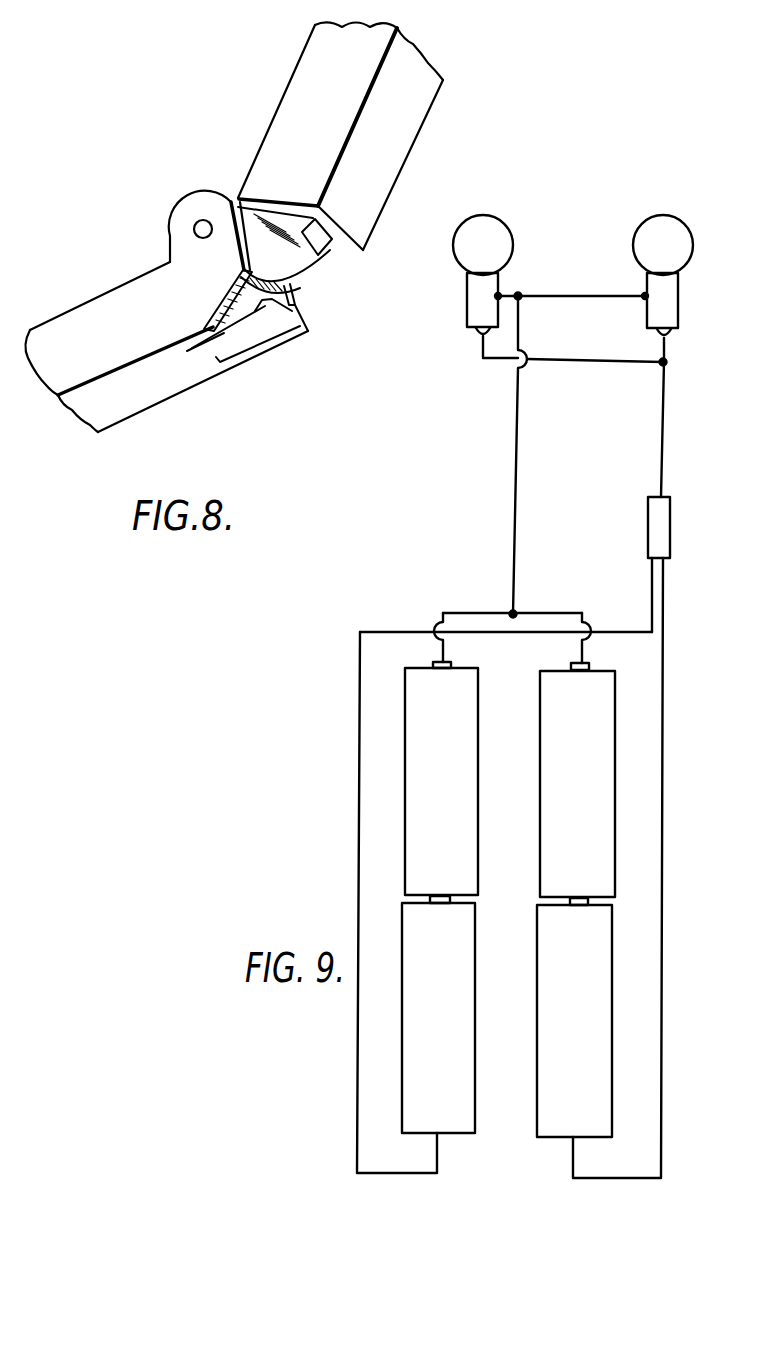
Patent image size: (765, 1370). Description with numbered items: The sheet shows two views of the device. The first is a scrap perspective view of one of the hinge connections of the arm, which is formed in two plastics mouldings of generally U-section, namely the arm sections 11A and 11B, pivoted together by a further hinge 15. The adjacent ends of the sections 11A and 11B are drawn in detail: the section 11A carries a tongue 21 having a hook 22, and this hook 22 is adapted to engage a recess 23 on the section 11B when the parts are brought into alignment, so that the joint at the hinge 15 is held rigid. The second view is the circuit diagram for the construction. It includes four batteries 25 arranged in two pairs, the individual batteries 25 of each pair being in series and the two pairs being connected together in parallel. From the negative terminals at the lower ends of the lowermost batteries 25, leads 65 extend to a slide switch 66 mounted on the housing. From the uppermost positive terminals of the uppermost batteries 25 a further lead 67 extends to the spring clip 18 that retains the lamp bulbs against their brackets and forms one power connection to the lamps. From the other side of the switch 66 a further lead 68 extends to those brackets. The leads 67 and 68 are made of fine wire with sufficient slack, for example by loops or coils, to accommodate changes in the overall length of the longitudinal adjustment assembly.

In FIG. 8, the arm section 11A is at (182, 373).
In FIG. 8, the arm section 11B is at (392, 155).
In FIG. 8, the hinge 15 is at (199, 229).
In FIG. 8, the tongue 21 is at (263, 328).
In FIG. 8, the hook 22 is at (287, 318).
In FIG. 8, the recess 23 is at (327, 252).
In FIG. 9, the spring clip 18 is at (572, 294).
In FIG. 9, the batteries 25 is at (595, 785).
In FIG. 9, the leads 65 is at (357, 1088).
In FIG. 9, the slide switch 66 is at (650, 533).
In FIG. 9, the lead 67 is at (518, 432).
In FIG. 9, the lead 68 is at (662, 431).